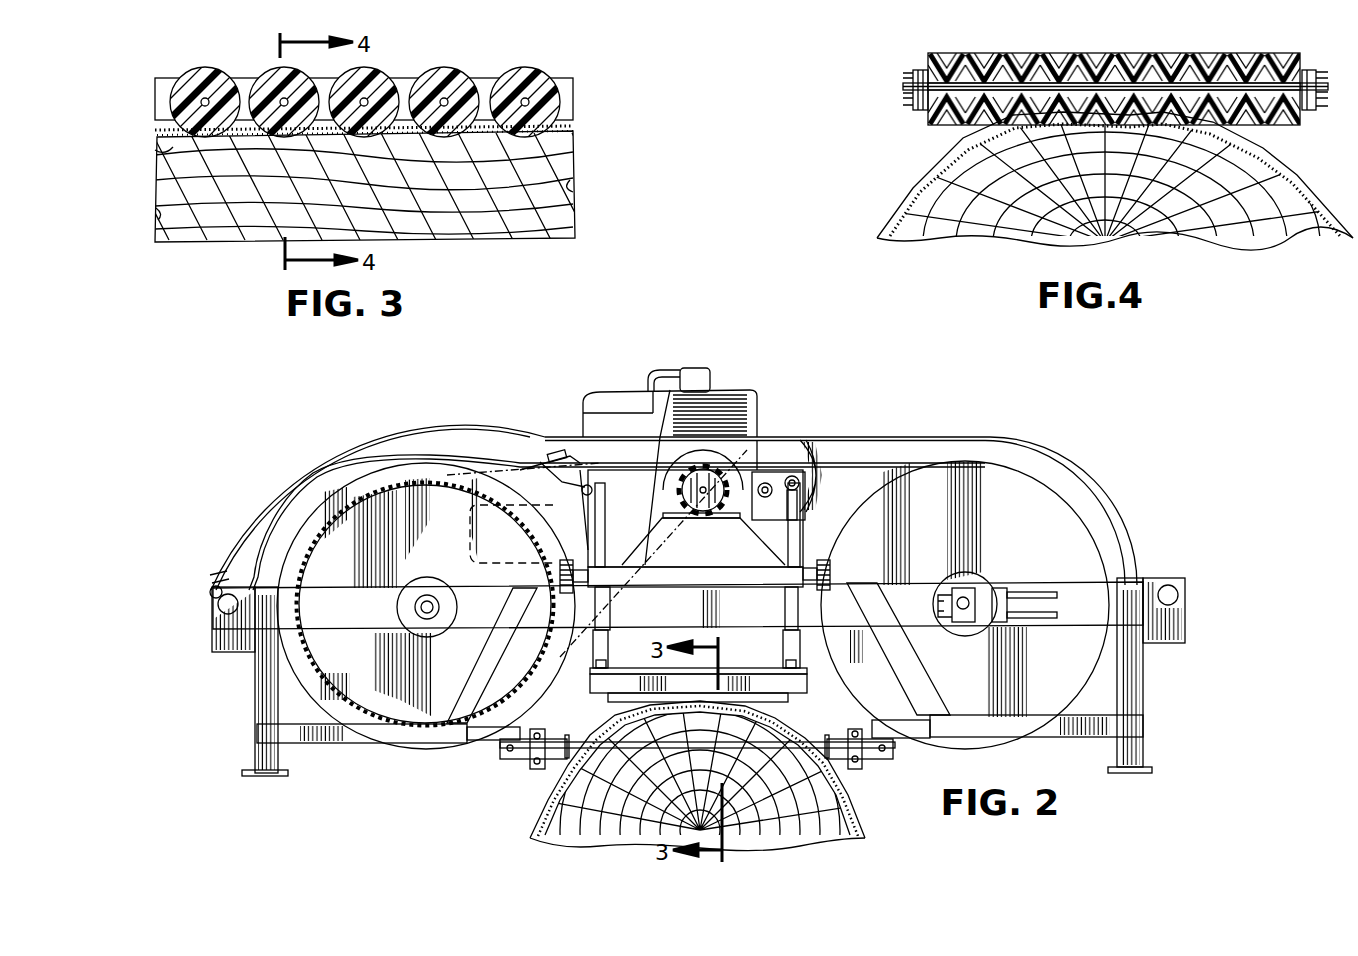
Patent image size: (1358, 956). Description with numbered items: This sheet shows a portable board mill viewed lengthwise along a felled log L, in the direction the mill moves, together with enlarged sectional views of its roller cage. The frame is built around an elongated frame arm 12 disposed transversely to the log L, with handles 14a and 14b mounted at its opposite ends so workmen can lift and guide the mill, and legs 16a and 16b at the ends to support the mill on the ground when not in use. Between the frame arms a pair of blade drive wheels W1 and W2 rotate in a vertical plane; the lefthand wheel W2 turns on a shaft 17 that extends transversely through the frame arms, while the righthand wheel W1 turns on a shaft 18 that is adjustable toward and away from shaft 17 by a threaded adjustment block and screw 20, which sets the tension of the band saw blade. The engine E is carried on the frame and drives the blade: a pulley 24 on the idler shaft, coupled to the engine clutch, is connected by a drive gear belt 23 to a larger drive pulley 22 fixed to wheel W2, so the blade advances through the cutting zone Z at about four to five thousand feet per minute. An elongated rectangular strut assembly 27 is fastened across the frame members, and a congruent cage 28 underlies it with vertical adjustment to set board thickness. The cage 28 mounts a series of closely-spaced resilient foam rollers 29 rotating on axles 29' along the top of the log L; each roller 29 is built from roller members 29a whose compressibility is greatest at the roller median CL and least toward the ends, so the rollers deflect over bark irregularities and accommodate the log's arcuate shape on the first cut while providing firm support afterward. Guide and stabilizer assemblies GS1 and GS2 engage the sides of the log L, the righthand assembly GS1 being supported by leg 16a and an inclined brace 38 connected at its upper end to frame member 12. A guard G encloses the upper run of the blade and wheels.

In FIG. 2, the frame arm 12 is at (1082, 573).
In FIG. 2, the handle 14a is at (1172, 595).
In FIG. 2, the handle 14b is at (215, 625).
In FIG. 2, the leg 16a is at (1140, 750).
In FIG. 2, the leg 16b is at (258, 753).
In FIG. 2, the shaft 17 is at (417, 615).
In FIG. 2, the shaft 18 is at (970, 613).
In FIG. 2, the threaded adjustment block and screw 20 is at (1000, 593).
In FIG. 2, the drive pulley 22 is at (333, 557).
In FIG. 2, the drive gear belt 23 is at (562, 440).
In FIG. 2, the pulley 24 is at (717, 470).
In FIG. 2, the strut assembly 27 is at (718, 575).
In FIG. 2, the cage 28 is at (607, 682).
In FIG. 3, the roller 29 is at (365, 91).
In FIG. 2, the roller 29 is at (696, 627).
In FIG. 4, the roller member 29a is at (1062, 53).
In FIG. 4, the axle 29' is at (1084, 115).
In FIG. 2, the inclined brace 38 is at (890, 640).
In FIG. 2, the engine E is at (757, 403).
In FIG. 2, the guard G is at (993, 437).
In FIG. 2, the blade drive wheel W1 is at (912, 561).
In FIG. 2, the blade drive wheel W2 is at (405, 566).
In FIG. 2, the blade guide and stabilizer assembly GS1 is at (862, 757).
In FIG. 2, the blade guide and stabilizer assembly GS2 is at (523, 757).
In FIG. 3, the log L is at (440, 213).
In FIG. 4, the log L is at (1068, 212).
In FIG. 2, the log L is at (827, 807).
In FIG. 2, the cutting zone Z is at (557, 790).
In FIG. 4, the roller median CL is at (1123, 53).